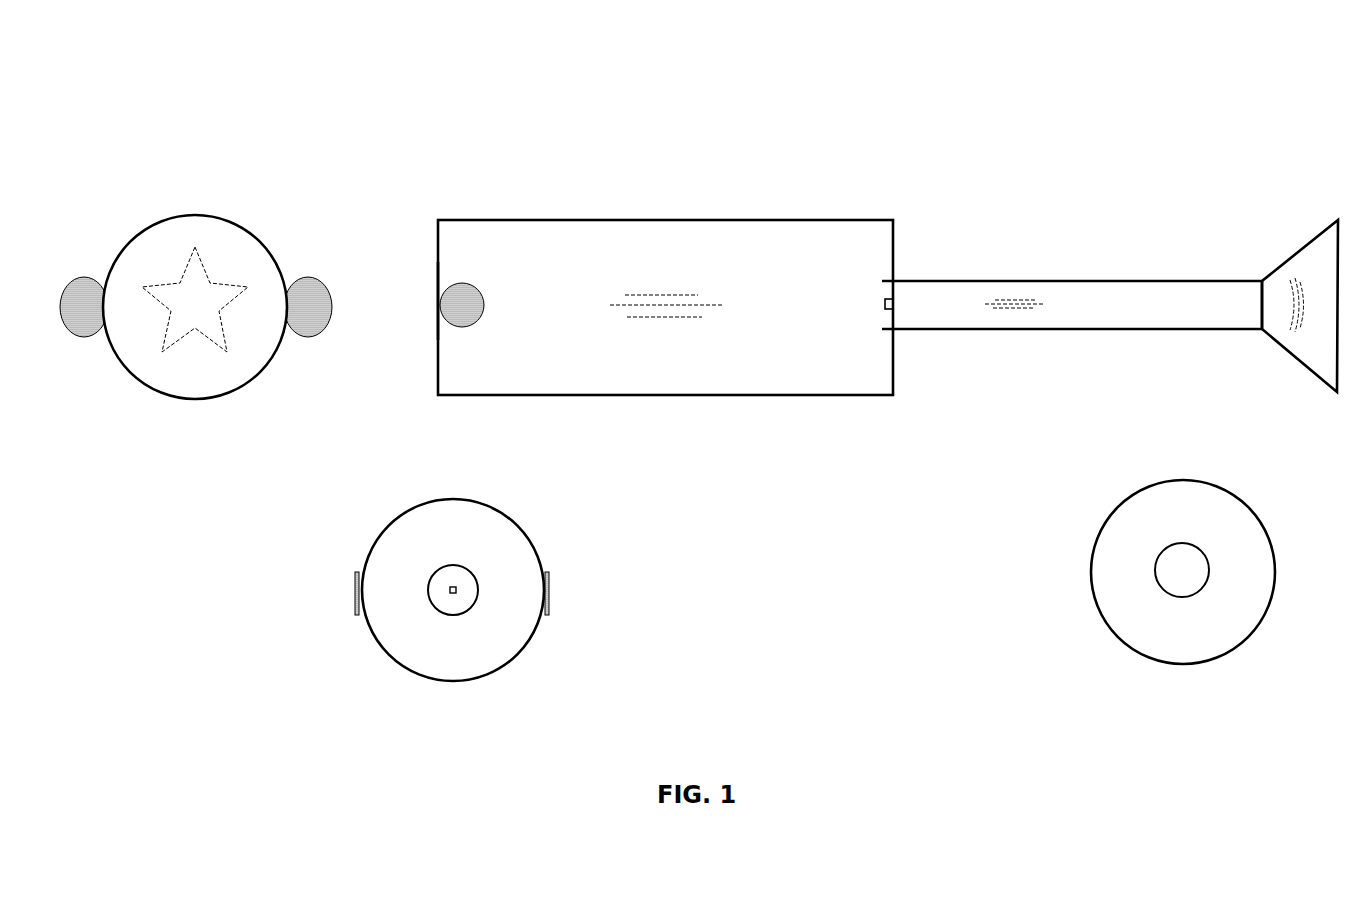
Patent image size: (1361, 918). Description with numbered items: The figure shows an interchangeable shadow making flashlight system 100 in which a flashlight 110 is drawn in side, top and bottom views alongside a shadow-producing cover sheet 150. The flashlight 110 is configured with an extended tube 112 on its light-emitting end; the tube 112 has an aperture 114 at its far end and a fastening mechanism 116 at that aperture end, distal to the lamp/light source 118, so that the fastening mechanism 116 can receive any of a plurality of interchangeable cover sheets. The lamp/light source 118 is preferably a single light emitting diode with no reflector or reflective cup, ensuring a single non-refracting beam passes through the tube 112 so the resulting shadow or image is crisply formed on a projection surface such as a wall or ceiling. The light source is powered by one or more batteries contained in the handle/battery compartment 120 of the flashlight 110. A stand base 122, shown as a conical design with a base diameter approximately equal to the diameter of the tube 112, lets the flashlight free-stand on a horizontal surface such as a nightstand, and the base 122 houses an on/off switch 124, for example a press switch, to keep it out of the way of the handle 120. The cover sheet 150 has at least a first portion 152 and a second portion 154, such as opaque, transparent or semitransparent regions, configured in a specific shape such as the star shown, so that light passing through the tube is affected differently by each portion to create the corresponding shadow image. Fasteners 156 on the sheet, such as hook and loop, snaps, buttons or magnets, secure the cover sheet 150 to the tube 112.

The interchangeable shadow making flashlight system 100 is at (1134, 100).
The flashlight 110 is at (794, 467).
The tube 112 is at (555, 235).
The aperture 114 is at (440, 262).
The fastening mechanism 116 is at (477, 322).
The lamp/light source 118 is at (470, 625).
The handle/battery compartment 120 is at (1092, 300).
The stand base 122 is at (1240, 535).
The on/off switch 124 is at (1202, 578).
The shadow-producing cover sheet 150 is at (195, 315).
The first portion 152 is at (242, 258).
The second portion 154 is at (208, 328).
The fasteners 156 is at (90, 335).